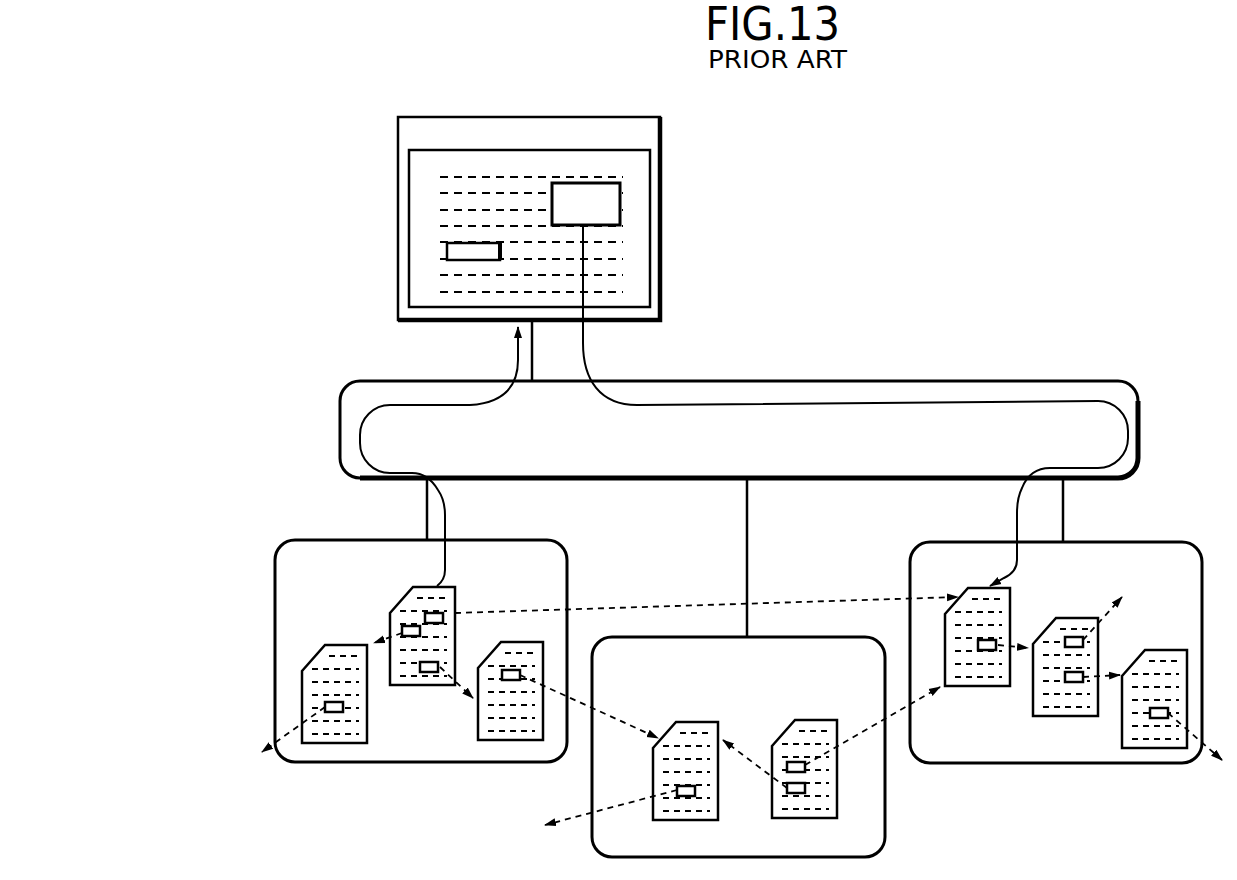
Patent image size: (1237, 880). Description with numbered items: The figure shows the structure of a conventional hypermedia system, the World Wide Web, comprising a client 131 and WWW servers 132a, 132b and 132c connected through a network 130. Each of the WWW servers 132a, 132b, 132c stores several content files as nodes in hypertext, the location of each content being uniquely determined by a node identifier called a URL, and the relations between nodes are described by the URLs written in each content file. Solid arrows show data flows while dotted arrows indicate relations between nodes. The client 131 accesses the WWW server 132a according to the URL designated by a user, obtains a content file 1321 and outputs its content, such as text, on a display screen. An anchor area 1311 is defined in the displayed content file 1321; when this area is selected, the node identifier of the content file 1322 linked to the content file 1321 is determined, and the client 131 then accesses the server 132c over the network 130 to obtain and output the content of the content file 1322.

The client 131 is at (650, 116).
The anchor area 1311 is at (620, 198).
The network 130 is at (797, 380).
The WWW server 132a is at (416, 631).
The WWW server 132b is at (848, 637).
The WWW server 132c is at (1066, 625).
The content file 1321 is at (455, 592).
The content file 1322 is at (1010, 603).